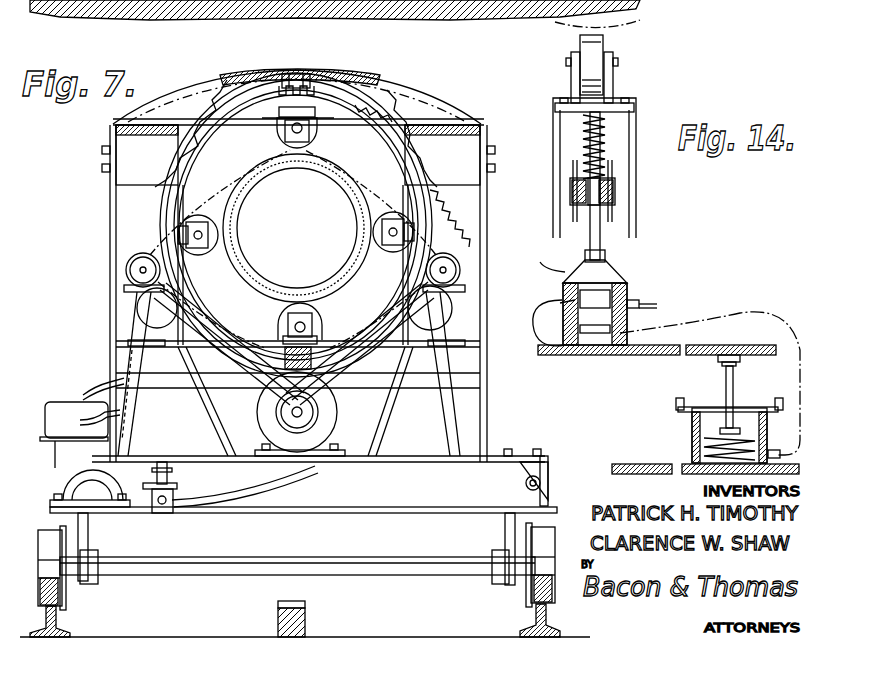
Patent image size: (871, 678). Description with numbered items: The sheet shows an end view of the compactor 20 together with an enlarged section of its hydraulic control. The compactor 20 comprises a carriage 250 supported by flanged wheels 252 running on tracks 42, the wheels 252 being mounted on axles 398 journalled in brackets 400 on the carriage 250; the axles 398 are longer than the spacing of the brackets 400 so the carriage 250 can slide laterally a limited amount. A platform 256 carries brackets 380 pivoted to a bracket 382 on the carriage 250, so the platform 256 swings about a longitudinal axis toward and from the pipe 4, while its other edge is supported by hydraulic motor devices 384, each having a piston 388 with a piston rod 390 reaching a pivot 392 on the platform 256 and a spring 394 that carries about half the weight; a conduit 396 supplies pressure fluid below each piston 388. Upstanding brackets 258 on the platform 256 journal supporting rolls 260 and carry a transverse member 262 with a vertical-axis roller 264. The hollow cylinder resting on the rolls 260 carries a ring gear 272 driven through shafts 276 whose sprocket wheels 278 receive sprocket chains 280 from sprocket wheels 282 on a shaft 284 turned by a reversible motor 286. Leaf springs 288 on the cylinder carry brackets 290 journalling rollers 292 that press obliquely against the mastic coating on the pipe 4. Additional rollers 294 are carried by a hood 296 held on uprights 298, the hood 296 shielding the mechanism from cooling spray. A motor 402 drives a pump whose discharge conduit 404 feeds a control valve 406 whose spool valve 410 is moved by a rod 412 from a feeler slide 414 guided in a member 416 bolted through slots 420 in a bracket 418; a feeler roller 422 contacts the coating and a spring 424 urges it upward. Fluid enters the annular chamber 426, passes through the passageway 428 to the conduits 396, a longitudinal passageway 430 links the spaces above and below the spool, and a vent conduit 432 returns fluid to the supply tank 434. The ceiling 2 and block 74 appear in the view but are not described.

In FIG. 7, the ceiling 2 is at (188, 20).
In FIG. 7, the pipe 4 is at (332, 200).
In FIG. 14, the pipe 4 is at (640, 22).
In FIG. 7, the compactor 20 is at (100, 182).
In FIG. 7, the tracks 42 is at (48, 624).
In FIG. 7, the stop block 74 is at (305, 606).
In FIG. 7, the carriage 250 is at (398, 519).
In FIG. 14, the carriage 250 is at (668, 474).
In FIG. 7, the flanged wheels 252 is at (62, 594).
In FIG. 7, the platform 256 is at (404, 456).
In FIG. 14, the platform 256 is at (720, 348).
In FIG. 7, the upstanding brackets 258 is at (195, 395).
In FIG. 7, the supporting rolls 260 is at (137, 312).
In FIG. 7, the transverse member 262 is at (385, 392).
In FIG. 7, the roller 264 is at (318, 345).
In FIG. 7, the ring gear 272 is at (313, 80).
In FIG. 7, the shafts 276 is at (140, 262).
In FIG. 7, the sprocket wheel 278 is at (124, 290).
In FIG. 7, the sprocket chains 280 is at (250, 280).
In FIG. 7, the sprocket wheels 282 is at (278, 418).
In FIG. 7, the shaft 284 is at (272, 434).
In FIG. 7, the motor 286 is at (330, 420).
In FIG. 7, the leaf springs 288 is at (258, 118).
In FIG. 7, the bracket 290 is at (276, 136).
In FIG. 7, the rollers 292 is at (322, 136).
In FIG. 7, the additional rollers 294 is at (280, 80).
In FIG. 7, the hood 296 is at (398, 92).
In FIG. 7, the uprights 298 is at (110, 218).
In FIG. 7, the brackets 380 is at (548, 462).
In FIG. 7, the bracket 382 is at (541, 483).
In FIG. 7, the hydraulic motor devices 384 is at (158, 505).
In FIG. 14, the hydraulic motor devices 384 is at (676, 405).
In FIG. 14, the piston 388 is at (743, 407).
In FIG. 7, the piston rod 390 is at (156, 480).
In FIG. 14, the piston rod 390 is at (726, 390).
In FIG. 7, the pivot 392 is at (168, 462).
In FIG. 14, the pivot 392 is at (718, 360).
In FIG. 14, the spring 394 is at (700, 448).
In FIG. 7, the conduit 396 is at (235, 490).
In FIG. 14, the conduit 396 is at (550, 300).
In FIG. 7, the axles 398 is at (210, 572).
In FIG. 7, the brackets 400 is at (88, 541).
In FIG. 7, the motor 402 is at (52, 484).
In FIG. 7, the discharge conduit 404 is at (88, 412).
In FIG. 14, the discharge conduit 404 is at (640, 304).
In FIG. 14, the control valve 406 is at (625, 262).
In FIG. 14, the spool valve 410 is at (605, 256).
In FIG. 14, the rod 412 is at (615, 228).
In FIG. 14, the feeler slide 414 is at (575, 188).
In FIG. 14, the member 416 is at (613, 188).
In FIG. 14, the bracket 418 is at (636, 110).
In FIG. 14, the slots 420 is at (610, 160).
In FIG. 14, the feeler roller 422 is at (604, 42).
In FIG. 14, the spring 424 is at (580, 130).
In FIG. 14, the annular chamber 426 is at (565, 318).
In FIG. 14, the annular groove or passageway 428 is at (612, 292).
In FIG. 14, the longitudinal passageway 430 is at (585, 355).
In FIG. 7, the vent conduit 432 is at (112, 378).
In FIG. 14, the vent conduit 432 is at (558, 270).
In FIG. 7, the supply tank 434 is at (55, 406).